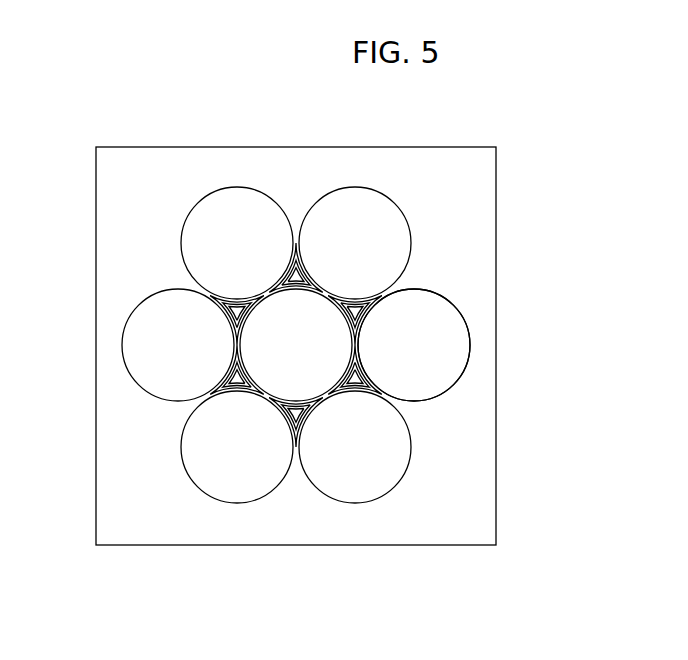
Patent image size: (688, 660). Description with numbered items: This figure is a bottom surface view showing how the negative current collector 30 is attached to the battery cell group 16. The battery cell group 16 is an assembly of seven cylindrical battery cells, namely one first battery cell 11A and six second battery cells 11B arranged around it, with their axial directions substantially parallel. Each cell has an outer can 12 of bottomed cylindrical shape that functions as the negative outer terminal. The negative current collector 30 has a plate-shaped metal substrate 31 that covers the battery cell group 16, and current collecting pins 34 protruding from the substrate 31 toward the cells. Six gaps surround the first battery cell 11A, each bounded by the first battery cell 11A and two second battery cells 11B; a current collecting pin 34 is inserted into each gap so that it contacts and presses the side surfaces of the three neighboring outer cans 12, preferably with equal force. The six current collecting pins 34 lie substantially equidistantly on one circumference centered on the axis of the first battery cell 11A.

The negative current collector 30 is at (498, 166).
The substrate 31 is at (478, 405).
The outer can 12 is at (462, 313).
The first battery cell 11A is at (276, 357).
The second battery cell 11B is at (159, 357).
The current collecting pin 34 is at (227, 317).
The battery cell group 16 is at (293, 480).